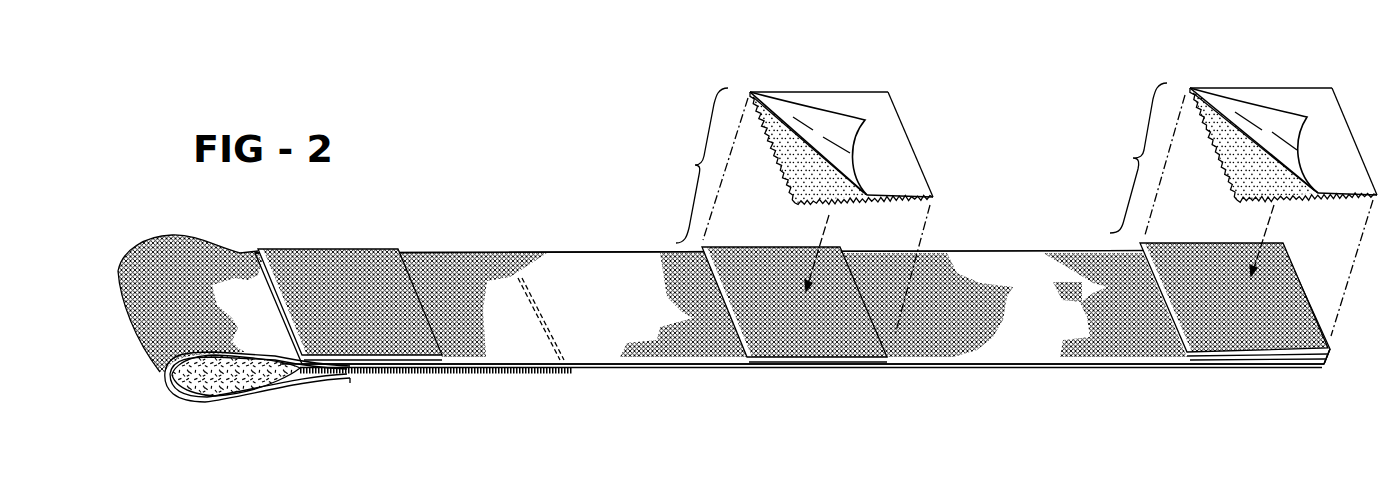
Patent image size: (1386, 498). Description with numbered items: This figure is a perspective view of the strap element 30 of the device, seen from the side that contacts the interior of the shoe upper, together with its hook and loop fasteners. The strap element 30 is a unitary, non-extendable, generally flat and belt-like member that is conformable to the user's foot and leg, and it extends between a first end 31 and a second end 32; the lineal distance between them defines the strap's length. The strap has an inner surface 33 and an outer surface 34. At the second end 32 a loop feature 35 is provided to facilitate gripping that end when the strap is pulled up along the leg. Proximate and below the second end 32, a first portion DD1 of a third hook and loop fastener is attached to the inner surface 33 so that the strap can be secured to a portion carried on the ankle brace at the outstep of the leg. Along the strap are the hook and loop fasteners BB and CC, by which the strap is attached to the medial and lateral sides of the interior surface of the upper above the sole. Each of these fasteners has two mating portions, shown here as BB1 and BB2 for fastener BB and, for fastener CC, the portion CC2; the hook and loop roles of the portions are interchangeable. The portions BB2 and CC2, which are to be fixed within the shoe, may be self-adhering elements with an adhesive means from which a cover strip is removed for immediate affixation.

The strap element 30 is at (724, 330).
The first end 31 is at (1336, 349).
The second end 32 is at (234, 340).
The inner surface 33 is at (620, 367).
The outer surface 34 is at (590, 268).
The loop feature 35 is at (240, 393).
The first portion of hook and loop fastener DD DD1 is at (440, 373).
The first portion of hook and loop fastener BB BB1 is at (807, 367).
The second portion of hook and loop fastener BB BB2 is at (1250, 87).
The hook and loop fastener BB is at (1235, 183).
The second portion of hook and loop fastener CC CC2 is at (865, 95).
The hook and loop fastener CC is at (799, 193).